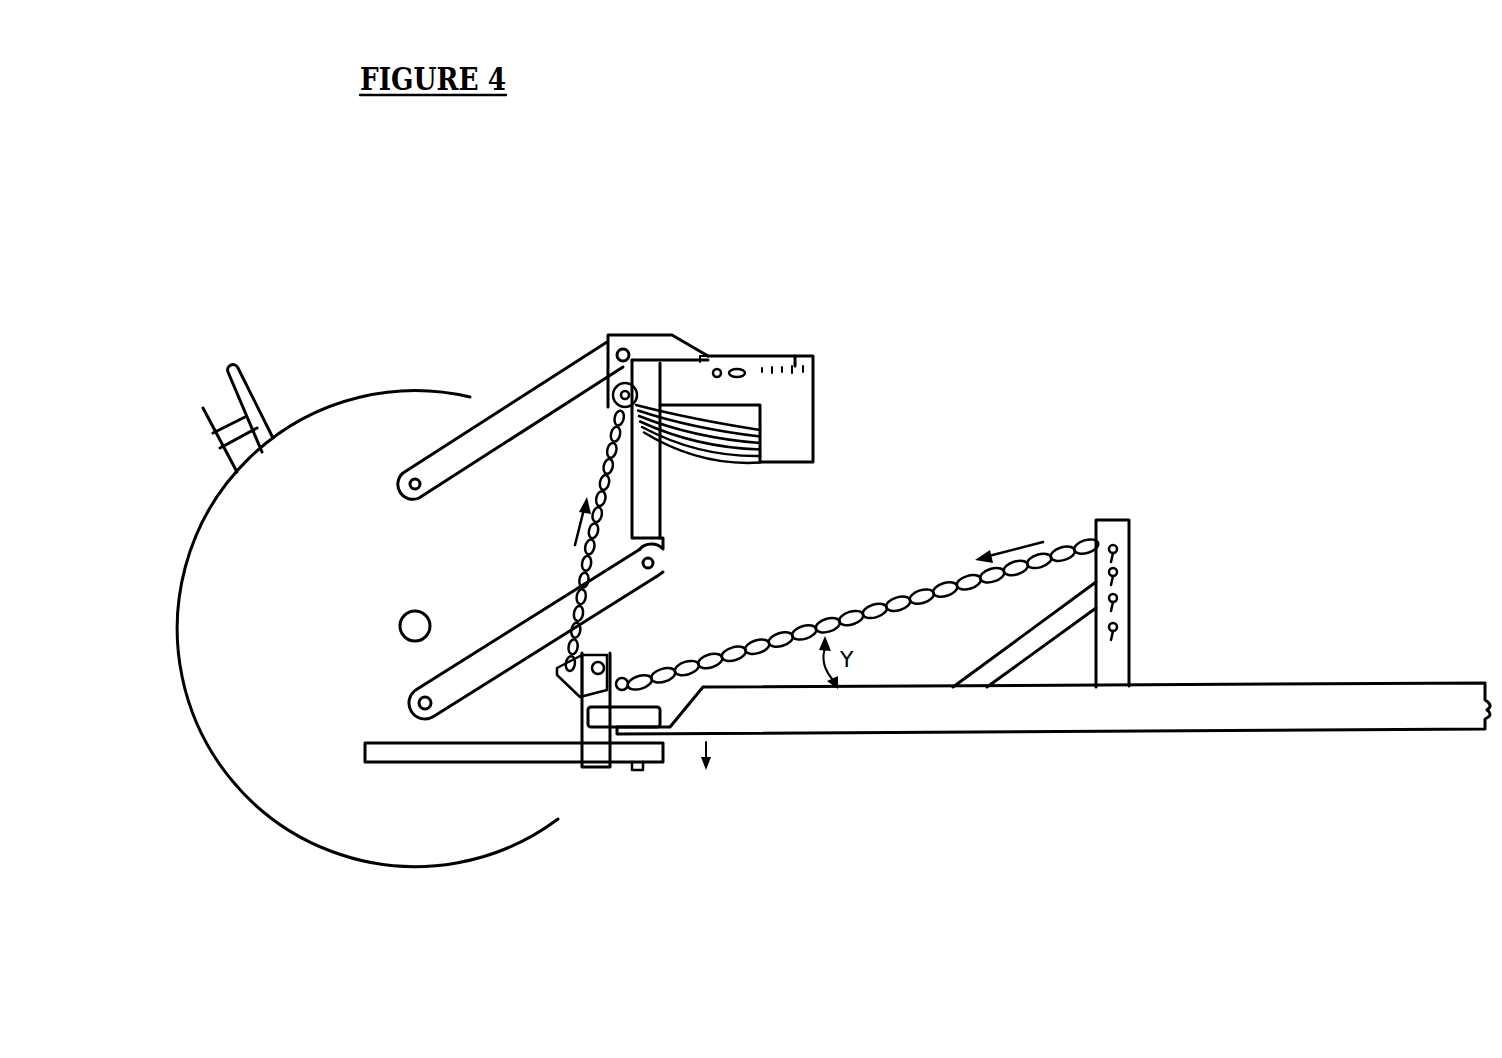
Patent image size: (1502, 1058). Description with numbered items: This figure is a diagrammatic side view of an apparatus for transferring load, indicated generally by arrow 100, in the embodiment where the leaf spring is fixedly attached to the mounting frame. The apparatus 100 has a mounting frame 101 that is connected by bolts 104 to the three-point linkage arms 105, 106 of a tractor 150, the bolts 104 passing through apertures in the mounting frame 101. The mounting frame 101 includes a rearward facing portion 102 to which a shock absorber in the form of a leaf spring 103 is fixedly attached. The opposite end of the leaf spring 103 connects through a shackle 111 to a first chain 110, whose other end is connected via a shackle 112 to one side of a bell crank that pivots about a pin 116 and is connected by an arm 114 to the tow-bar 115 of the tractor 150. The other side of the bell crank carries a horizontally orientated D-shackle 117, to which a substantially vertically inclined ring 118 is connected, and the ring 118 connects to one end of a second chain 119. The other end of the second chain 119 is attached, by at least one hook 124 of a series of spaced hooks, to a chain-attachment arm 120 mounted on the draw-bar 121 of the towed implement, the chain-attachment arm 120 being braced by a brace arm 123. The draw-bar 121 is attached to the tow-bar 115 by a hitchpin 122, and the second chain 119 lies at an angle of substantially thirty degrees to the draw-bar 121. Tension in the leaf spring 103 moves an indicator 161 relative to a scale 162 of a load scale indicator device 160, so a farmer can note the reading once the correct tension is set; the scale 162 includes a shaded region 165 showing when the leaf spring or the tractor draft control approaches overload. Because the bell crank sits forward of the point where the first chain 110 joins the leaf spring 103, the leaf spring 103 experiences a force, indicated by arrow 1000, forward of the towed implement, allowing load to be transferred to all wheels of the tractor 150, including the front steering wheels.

The apparatus for transferring load 100 is at (993, 244).
The tractor 150 is at (463, 353).
The force arrow 1000 is at (587, 316).
The three-point linkage arm 105 is at (524, 400).
The bolts 104 is at (620, 347).
The mounting frame 101 is at (672, 506).
The load scale indicator device 160 is at (828, 353).
The indicator 161 is at (800, 354).
The scale 162 is at (800, 382).
The rearward facing portion 102 is at (803, 408).
The shaded region 165 is at (736, 380).
The shackle 111 is at (612, 418).
The leaf spring 103 is at (713, 464).
The first chain 110 is at (603, 465).
The three-point linkage arm 106 is at (513, 636).
The shackle 112 is at (578, 668).
The pin 116 is at (598, 660).
The arm 114 is at (590, 695).
The ring 118 is at (656, 688).
The D-shackle 117 is at (660, 665).
The second chain 119 is at (616, 672).
The draw-bar 121 is at (1182, 700).
The tow-bar 115 is at (541, 750).
The hitchpin 122 is at (648, 770).
The chain-attachment arm 120 is at (1131, 552).
The hook 124 is at (1132, 522).
The brace arm 123 is at (1023, 652).